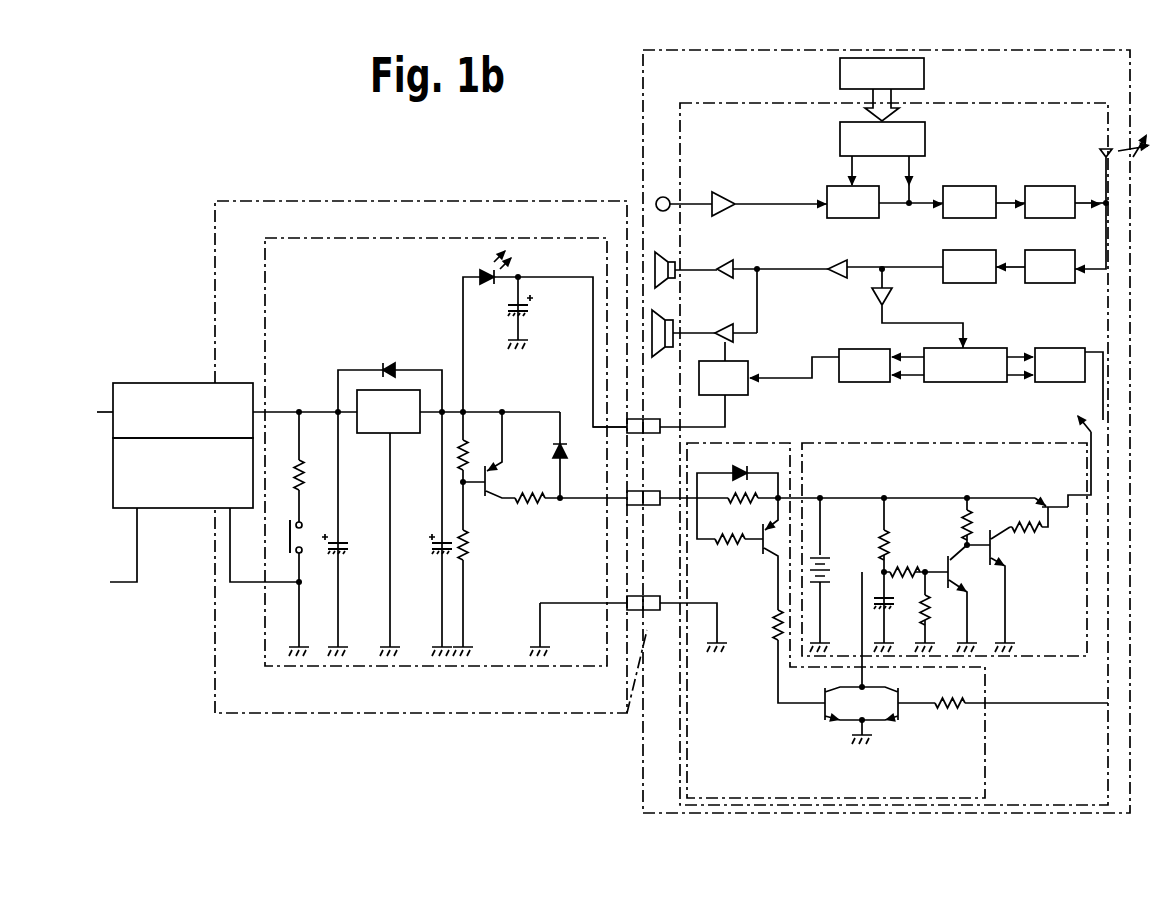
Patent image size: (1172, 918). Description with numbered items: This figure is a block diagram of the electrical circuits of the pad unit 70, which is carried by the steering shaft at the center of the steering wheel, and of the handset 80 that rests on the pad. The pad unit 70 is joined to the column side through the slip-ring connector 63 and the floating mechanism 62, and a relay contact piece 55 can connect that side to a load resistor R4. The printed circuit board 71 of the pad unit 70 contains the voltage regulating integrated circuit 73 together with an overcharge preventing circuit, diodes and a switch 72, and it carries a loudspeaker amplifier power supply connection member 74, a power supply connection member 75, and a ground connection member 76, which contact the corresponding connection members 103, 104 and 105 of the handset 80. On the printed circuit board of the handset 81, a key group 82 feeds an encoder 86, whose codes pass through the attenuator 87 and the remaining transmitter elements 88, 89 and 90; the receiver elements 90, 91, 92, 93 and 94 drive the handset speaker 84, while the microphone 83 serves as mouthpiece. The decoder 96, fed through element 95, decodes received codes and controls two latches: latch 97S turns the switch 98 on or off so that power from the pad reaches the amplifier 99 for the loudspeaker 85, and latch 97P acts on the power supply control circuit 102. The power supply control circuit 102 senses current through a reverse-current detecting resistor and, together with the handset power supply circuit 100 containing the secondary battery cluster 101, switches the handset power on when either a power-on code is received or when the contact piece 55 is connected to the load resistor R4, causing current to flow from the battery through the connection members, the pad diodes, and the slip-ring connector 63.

The relay contact piece 55 is at (103, 446).
The floating mechanism 62 is at (198, 508).
The slip-ring connector 63 is at (190, 383).
The pad unit 70 is at (425, 201).
The printed circuit board of the pad unit 71 is at (458, 238).
The switch 72 is at (290, 550).
The voltage regulating integrated circuit 73 is at (402, 433).
The loudspeaker amplifier power supply connection member 74 is at (632, 416).
The power supply connection member 75 is at (633, 490).
The ground connection member 76 is at (633, 597).
The handset 80 is at (643, 87).
The printed circuit board of the handset 81 is at (778, 103).
The key group 82 is at (926, 74).
The microphone 83 is at (660, 198).
The handset speaker 84 is at (662, 262).
The loudspeaker 85 is at (657, 322).
The encoder 86 is at (927, 137).
The attenuator 87 is at (828, 218).
The wireless transmitter element 88 is at (968, 186).
The wireless transmitter element 89 is at (1050, 186).
The wireless transmitter/receiver element 90 is at (1102, 150).
The wireless receiver element 91 is at (1052, 252).
The wireless receiver element 92 is at (963, 250).
The wireless receiver element 93 is at (848, 265).
The wireless receiver element 94 is at (735, 265).
The amplifier 95 is at (892, 296).
The decoder 96 is at (988, 348).
The latch 97S is at (862, 349).
The latch 97P is at (1060, 348).
The switch 98 is at (745, 365).
The amplifier 99 is at (737, 329).
The handset power supply circuit 100 is at (910, 443).
The secondary battery cluster 101 is at (830, 566).
The power supply control circuit 102 is at (728, 444).
The loudspeaker amplifier power supply connection member 103 is at (655, 417).
The power supply connection member 104 is at (658, 506).
The ground connection member 105 is at (658, 611).
The load resistor R4 is at (141, 614).